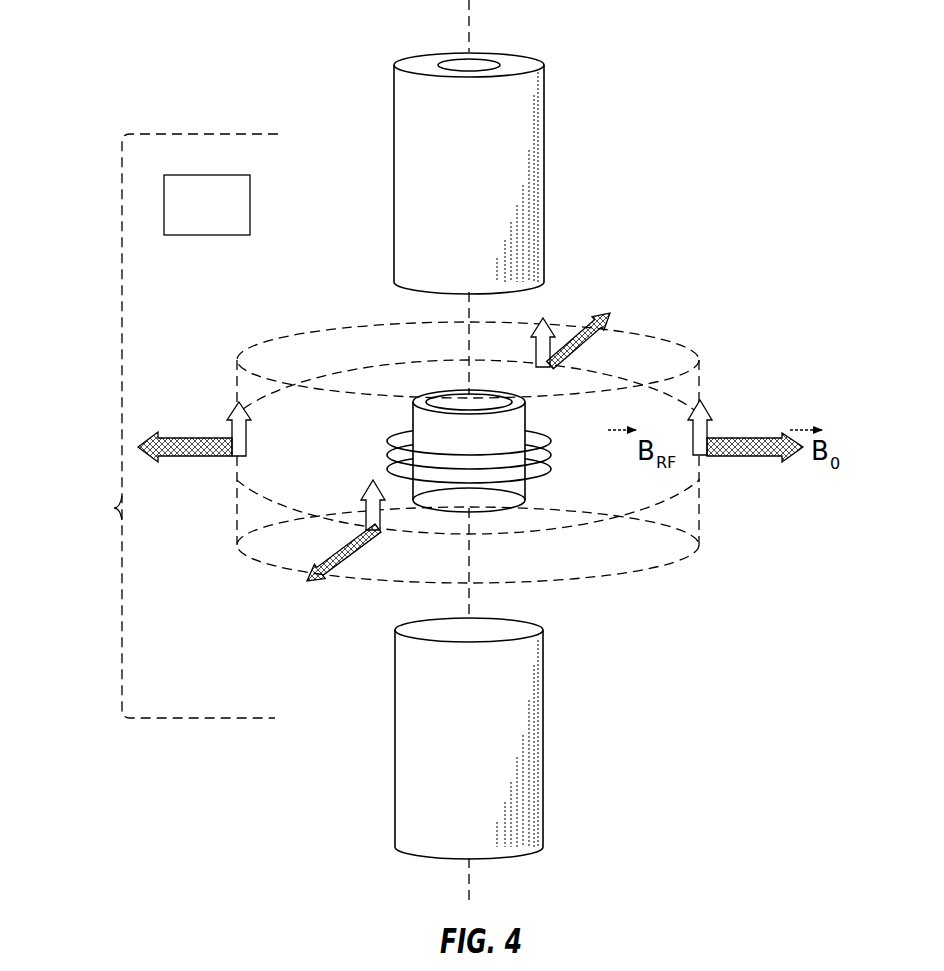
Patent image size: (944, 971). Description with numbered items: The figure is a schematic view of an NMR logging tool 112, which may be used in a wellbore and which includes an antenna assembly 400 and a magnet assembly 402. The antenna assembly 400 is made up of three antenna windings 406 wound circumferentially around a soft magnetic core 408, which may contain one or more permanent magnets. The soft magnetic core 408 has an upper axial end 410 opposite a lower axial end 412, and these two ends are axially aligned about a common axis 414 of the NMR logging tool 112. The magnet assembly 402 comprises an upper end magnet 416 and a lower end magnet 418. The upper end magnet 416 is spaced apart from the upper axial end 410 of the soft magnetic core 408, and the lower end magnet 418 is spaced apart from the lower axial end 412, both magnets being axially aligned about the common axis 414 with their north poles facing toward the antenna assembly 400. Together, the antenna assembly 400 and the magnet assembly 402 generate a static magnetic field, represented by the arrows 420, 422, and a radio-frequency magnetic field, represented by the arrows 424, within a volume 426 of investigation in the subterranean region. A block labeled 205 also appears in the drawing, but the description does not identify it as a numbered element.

The NMR logging tool 112 is at (720, 89).
The controller 205 is at (188, 217).
The antenna assembly 400 is at (442, 450).
The magnet assembly 402 is at (174, 426).
The antenna windings 406 is at (390, 450).
The soft magnetic core 408 is at (480, 394).
The upper axial end 410 is at (437, 390).
The lower axial end 412 is at (504, 524).
The common axis 414 is at (470, 26).
The upper end magnet 416 is at (377, 154).
The lower end magnet 418 is at (377, 738).
The static magnetic field arrow 420 is at (172, 436).
The static magnetic field arrow 422 is at (722, 458).
The radio-frequency magnetic field arrows 424 is at (232, 416).
The volume 426 is at (258, 516).